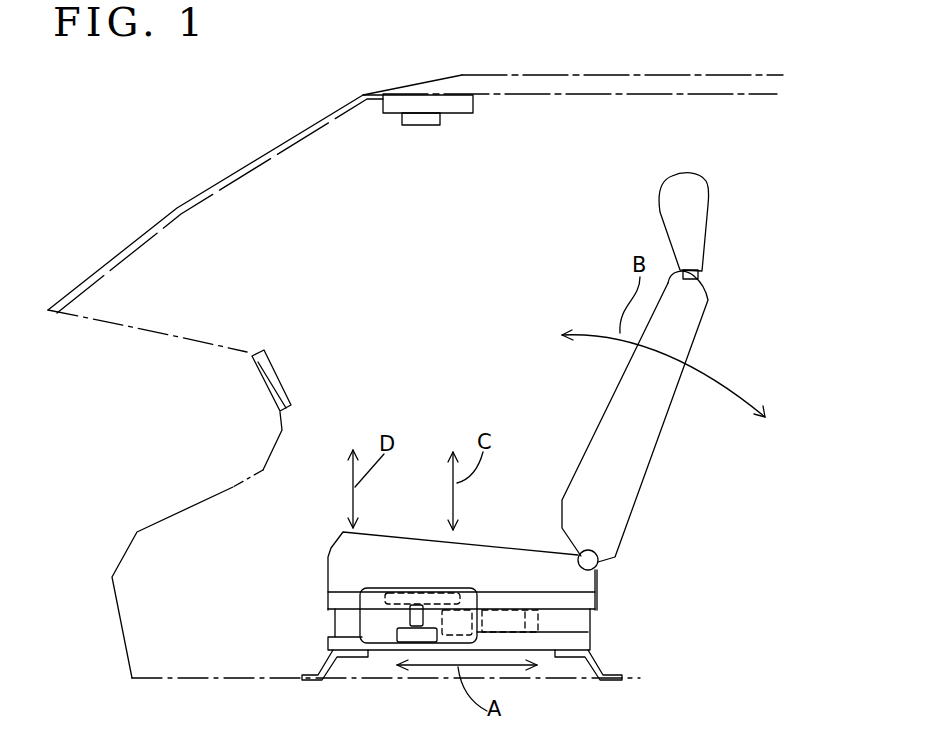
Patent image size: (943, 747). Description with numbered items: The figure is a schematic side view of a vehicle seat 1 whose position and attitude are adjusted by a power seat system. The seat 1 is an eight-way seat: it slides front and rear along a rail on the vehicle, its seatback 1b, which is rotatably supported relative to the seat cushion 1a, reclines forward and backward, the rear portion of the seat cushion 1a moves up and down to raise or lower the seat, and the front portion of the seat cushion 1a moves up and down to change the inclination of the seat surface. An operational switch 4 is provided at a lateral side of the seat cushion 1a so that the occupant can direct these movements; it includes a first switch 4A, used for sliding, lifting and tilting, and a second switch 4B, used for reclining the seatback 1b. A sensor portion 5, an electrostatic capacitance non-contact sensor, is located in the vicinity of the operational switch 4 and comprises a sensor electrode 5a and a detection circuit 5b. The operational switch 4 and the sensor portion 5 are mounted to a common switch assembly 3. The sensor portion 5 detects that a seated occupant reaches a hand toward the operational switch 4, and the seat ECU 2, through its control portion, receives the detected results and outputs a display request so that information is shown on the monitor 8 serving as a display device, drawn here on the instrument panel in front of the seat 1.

The seat 1 is at (728, 218).
The seat cushion 1a is at (507, 543).
The seatback 1b is at (695, 315).
The seat ECU 2 is at (502, 643).
The switch assembly 3 is at (382, 646).
The operational switch 4 is at (247, 580).
The first switch 4A is at (397, 633).
The second switch 4B is at (410, 613).
The sensor portion 5 is at (358, 634).
The sensor electrode 5a is at (400, 592).
The detection circuit 5b is at (448, 636).
The monitor 8 is at (280, 373).